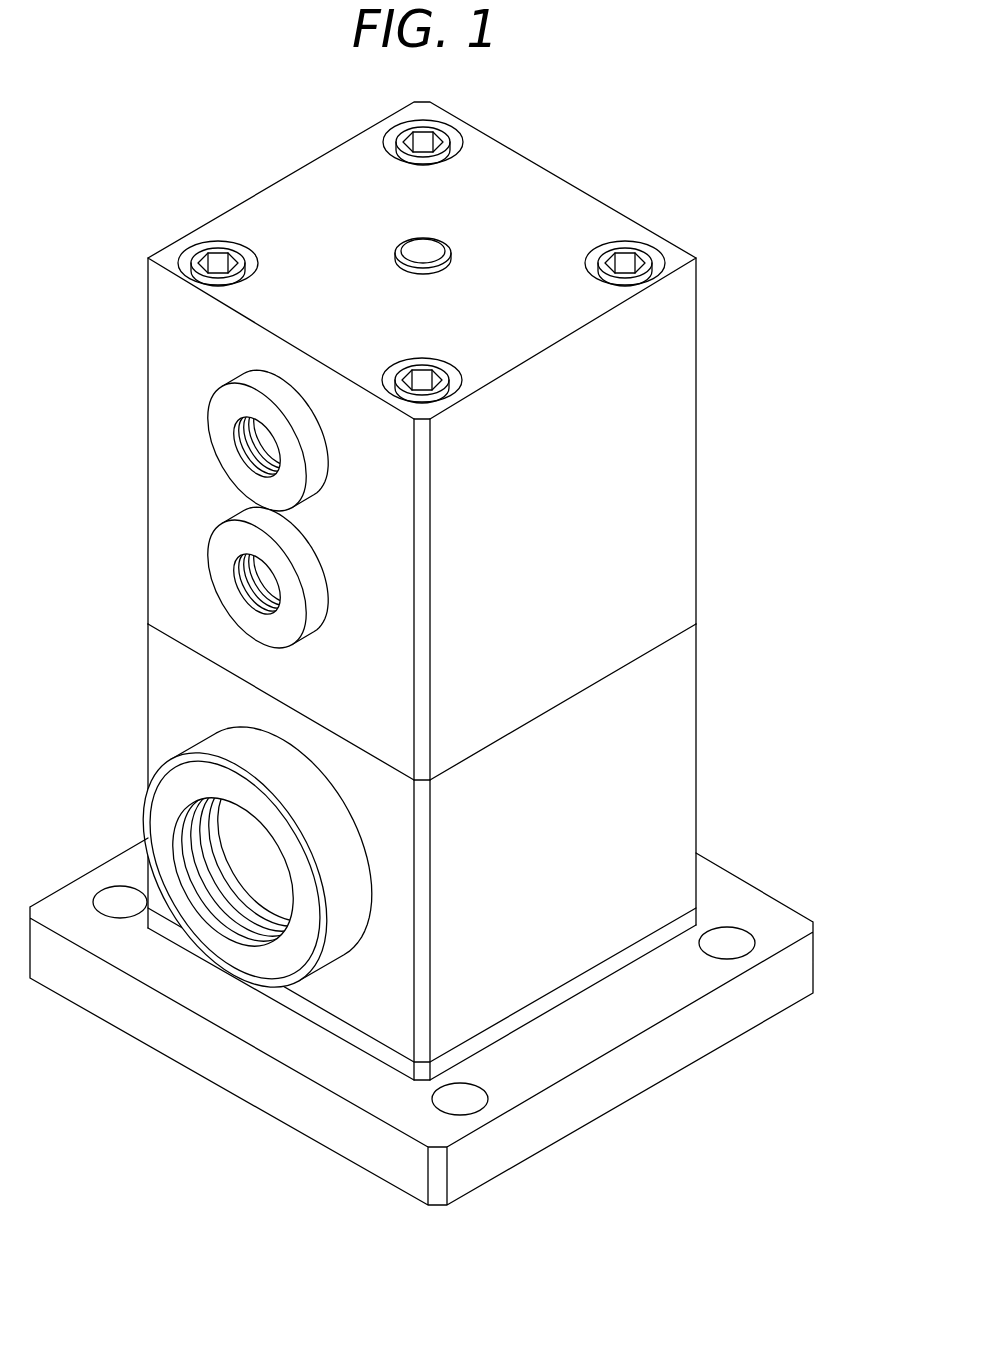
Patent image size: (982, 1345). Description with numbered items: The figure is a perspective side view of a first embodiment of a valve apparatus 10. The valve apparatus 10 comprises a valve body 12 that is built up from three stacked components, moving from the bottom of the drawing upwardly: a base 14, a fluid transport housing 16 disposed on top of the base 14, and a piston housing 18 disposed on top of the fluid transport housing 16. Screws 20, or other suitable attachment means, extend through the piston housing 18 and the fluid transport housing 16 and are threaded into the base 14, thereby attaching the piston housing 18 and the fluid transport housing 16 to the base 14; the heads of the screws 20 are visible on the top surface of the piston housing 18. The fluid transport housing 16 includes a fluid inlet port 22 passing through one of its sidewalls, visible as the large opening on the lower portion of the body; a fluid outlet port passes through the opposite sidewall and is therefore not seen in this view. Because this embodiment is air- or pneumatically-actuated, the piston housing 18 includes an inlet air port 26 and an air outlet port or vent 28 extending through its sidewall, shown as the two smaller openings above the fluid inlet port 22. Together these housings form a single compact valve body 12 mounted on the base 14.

The valve apparatus 10 is at (458, 653).
The valve body 12 is at (432, 591).
The base 14 is at (795, 978).
The fluid transport housing 16 is at (659, 828).
The piston housing 18 is at (667, 523).
The screws 20 is at (642, 252).
The fluid inlet port 22 is at (223, 860).
The inlet air port 26 is at (240, 584).
The air outlet port or vent 28 is at (240, 447).